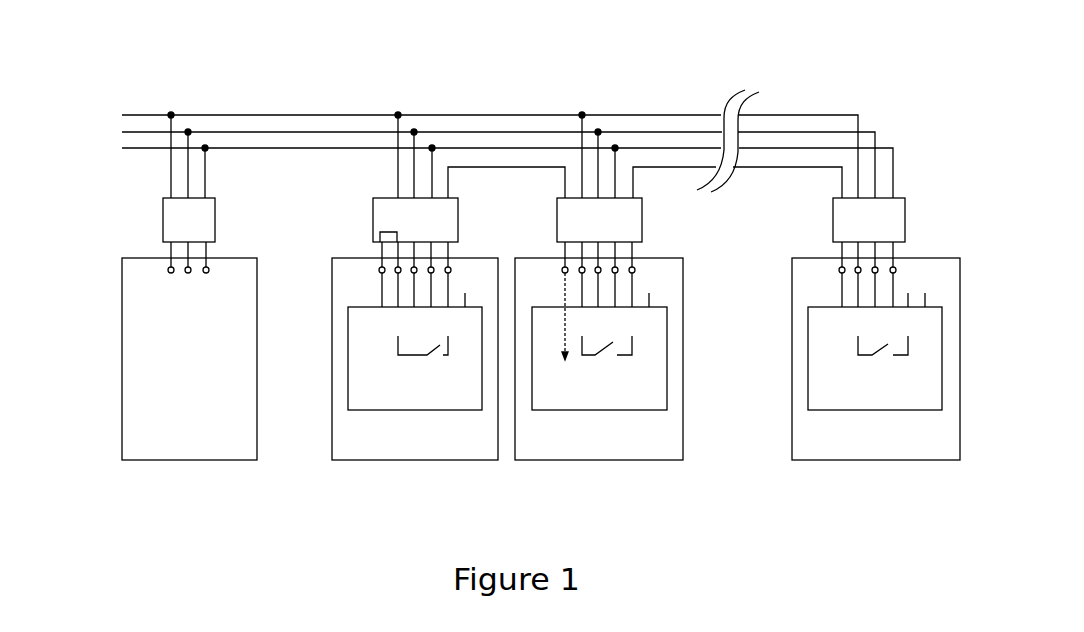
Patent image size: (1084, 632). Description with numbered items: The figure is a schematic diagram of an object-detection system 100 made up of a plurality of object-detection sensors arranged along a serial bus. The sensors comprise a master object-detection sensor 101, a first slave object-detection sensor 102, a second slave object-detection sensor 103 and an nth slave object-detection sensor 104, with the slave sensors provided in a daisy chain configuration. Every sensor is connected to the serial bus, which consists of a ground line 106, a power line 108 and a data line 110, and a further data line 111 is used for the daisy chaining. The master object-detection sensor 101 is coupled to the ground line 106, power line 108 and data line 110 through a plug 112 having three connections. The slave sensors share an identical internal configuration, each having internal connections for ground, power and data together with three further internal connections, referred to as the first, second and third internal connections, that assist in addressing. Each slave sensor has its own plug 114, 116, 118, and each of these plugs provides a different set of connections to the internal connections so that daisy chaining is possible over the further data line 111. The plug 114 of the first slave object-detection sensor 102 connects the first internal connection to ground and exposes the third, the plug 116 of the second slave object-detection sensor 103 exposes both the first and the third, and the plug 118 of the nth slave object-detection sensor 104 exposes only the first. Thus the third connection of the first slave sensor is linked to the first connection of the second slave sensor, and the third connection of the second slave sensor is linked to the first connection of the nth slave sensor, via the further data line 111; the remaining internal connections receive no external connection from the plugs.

The object-detection system 100 is at (651, 77).
The master object-detection sensor 101 is at (190, 461).
The first slave object-detection sensor 102 is at (417, 461).
The second slave object-detection sensor 103 is at (600, 461).
The nth slave object-detection sensor 104 is at (878, 461).
The ground line 106 is at (266, 116).
The power line 108 is at (339, 130).
The data line 110 is at (285, 150).
The further data line 111 is at (525, 167).
The plug 112 is at (163, 215).
The plug 114 is at (373, 215).
The plug 116 is at (557, 213).
The plug 118 is at (833, 210).